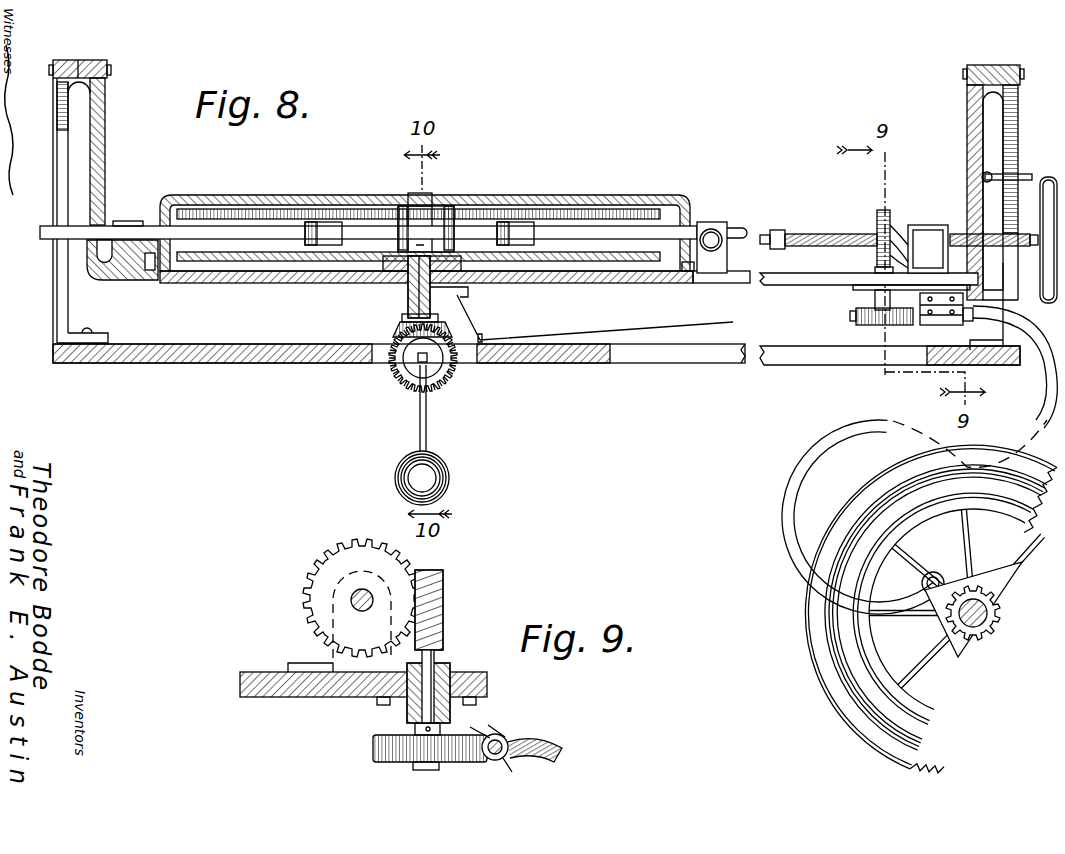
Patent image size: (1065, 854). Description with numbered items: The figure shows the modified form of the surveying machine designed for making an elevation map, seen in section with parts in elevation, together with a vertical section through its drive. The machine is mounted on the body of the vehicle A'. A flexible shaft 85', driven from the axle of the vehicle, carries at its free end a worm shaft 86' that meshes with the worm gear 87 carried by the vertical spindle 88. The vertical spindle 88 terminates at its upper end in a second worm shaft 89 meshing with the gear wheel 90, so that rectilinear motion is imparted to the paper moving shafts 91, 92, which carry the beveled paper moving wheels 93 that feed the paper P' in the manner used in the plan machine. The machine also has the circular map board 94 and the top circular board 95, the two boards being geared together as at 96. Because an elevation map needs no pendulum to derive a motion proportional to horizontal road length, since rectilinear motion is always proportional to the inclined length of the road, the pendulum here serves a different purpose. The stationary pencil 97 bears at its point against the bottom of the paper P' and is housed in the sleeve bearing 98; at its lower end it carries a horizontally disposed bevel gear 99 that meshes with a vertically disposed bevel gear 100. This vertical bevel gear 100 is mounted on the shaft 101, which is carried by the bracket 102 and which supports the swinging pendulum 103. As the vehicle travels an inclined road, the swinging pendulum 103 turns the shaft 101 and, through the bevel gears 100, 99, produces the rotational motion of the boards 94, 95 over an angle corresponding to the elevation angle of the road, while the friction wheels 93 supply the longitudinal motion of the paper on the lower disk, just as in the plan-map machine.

In FIG. 8, the paper P' is at (425, 211).
In FIG. 8, the body of the vehicle A' is at (729, 390).
In FIG. 8, the flexible shaft 85' is at (919, 460).
In FIG. 8, the worm shaft 86' is at (935, 319).
In FIG. 8, the worm gear 87 is at (856, 316).
In FIG. 9, the worm gear 87 is at (373, 750).
In FIG. 8, the vertical spindle 88 is at (878, 273).
In FIG. 9, the vertical spindle 88 is at (447, 680).
In FIG. 8, the worm shaft 89 is at (910, 228).
In FIG. 9, the worm shaft 89 is at (440, 605).
In FIG. 8, the gear wheel 90 is at (886, 212).
In FIG. 9, the gear wheel 90 is at (320, 560).
In FIG. 8, the paper moving shaft 91 is at (819, 230).
In FIG. 9, the paper moving shaft 91 is at (352, 602).
In FIG. 8, the paper moving shaft 92 is at (660, 228).
In FIG. 8, the beveled paper moving wheels 93 is at (313, 225).
In FIG. 8, the circular map board 94 is at (594, 275).
In FIG. 8, the top circular board 95 is at (584, 212).
In FIG. 8, the gearing 96 is at (436, 220).
In FIG. 8, the stationary pencil 97 is at (420, 287).
In FIG. 8, the sleeve bearing 98 is at (408, 270).
In FIG. 8, the horizontally disposed bevel gear 99 is at (400, 326).
In FIG. 8, the vertically disposed bevel gear 100 is at (398, 385).
In FIG. 8, the shaft 101 is at (524, 262).
In FIG. 8, the bracket 102 is at (440, 378).
In FIG. 8, the swinging pendulum 103 is at (449, 480).